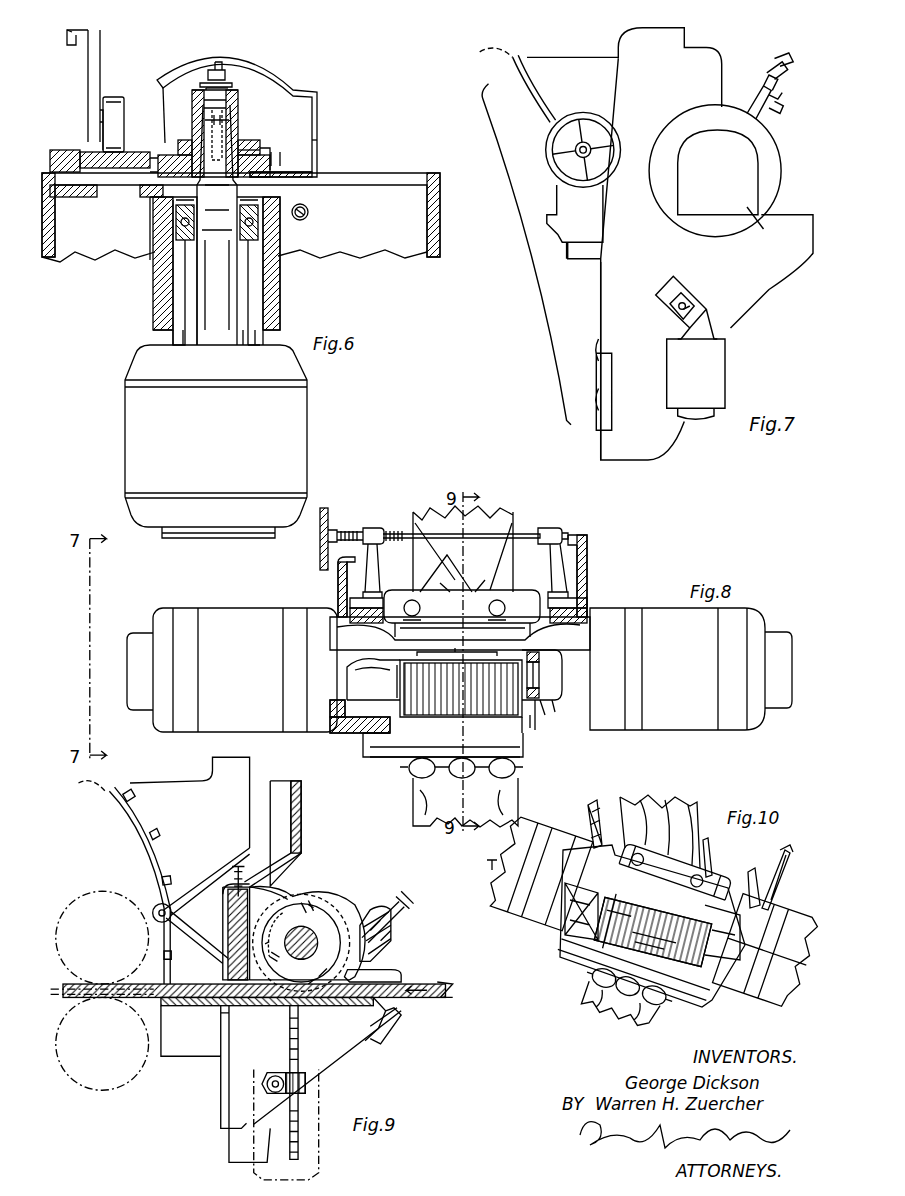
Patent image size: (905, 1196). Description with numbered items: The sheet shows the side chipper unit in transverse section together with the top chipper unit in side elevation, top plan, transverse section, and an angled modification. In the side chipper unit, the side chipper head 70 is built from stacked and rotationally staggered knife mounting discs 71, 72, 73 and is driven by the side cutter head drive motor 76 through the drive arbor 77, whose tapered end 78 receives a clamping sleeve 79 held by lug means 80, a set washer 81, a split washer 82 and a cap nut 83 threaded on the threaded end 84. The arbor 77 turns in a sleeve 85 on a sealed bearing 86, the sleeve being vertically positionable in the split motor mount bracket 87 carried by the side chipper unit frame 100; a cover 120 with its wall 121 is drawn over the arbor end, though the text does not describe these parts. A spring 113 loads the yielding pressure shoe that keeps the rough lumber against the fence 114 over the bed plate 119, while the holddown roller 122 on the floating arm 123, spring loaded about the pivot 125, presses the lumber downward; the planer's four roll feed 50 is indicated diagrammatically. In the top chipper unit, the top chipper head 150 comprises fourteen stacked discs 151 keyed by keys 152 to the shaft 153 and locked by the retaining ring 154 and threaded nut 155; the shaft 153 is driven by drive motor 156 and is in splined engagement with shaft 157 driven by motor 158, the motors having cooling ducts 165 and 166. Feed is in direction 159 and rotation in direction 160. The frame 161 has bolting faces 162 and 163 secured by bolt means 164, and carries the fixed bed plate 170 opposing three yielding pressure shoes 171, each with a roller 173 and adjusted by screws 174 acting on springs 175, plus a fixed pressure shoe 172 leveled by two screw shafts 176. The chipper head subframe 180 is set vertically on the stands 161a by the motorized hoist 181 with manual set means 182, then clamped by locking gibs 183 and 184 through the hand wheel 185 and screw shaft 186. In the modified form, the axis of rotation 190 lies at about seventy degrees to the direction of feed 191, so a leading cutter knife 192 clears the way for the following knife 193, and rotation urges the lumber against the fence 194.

In FIG. 9, the four roll feed 50 is at (70, 905).
In FIG. 6, the side chipper head 70 is at (288, 150).
In FIG. 6, the knife mounting disc 71 is at (258, 148).
In FIG. 6, the knife mounting disc 72 is at (272, 153).
In FIG. 6, the knife mounting disc 73 is at (283, 150).
In FIG. 6, the side cutter head drive motor 76 is at (228, 434).
In FIG. 6, the drive arbor 77 is at (217, 225).
In FIG. 6, the tapered end 78 is at (240, 115).
In FIG. 6, the clamping sleeve 79 is at (192, 99).
In FIG. 6, the lug means 80 is at (203, 88).
In FIG. 6, the set washer 81 is at (192, 90).
In FIG. 6, the split washer 82 is at (208, 75).
In FIG. 6, the cap nut 83 is at (228, 75).
In FIG. 6, the threaded end 84 is at (218, 62).
In FIG. 6, the sleeve 85 is at (280, 274).
In FIG. 6, the sealed bearing 86 is at (258, 220).
In FIG. 6, the split motor mount bracket 87 is at (153, 285).
In FIG. 6, the side chipper unit frame 100 is at (241, 226).
In FIG. 6, the spring 113 is at (304, 219).
In FIG. 6, the fence 114 is at (52, 152).
In FIG. 6, the bed plate 119 is at (70, 194).
In FIG. 6, the cap 120 is at (288, 83).
In FIG. 6, the cap wall 121 is at (317, 133).
In FIG. 6, the holddown roller 122 is at (103, 97).
In FIG. 6, the floating arm 123 is at (88, 70).
In FIG. 6, the pivot 125 is at (72, 38).
In FIG. 8, the top chipper head 150 is at (461, 676).
In FIG. 10, the top chipper head 150 is at (675, 847).
In FIG. 8, the stacked disc 151 is at (455, 717).
In FIG. 9, the stacked disc 151 is at (270, 910).
In FIG. 10, the stacked disc 151 is at (705, 925).
In FIG. 9, the key 152 is at (300, 922).
In FIG. 8, the shaft 153 is at (362, 733).
In FIG. 9, the shaft 153 is at (288, 907).
In FIG. 8, the retaining ring 154 is at (536, 726).
In FIG. 8, the threaded nut 155 is at (550, 697).
In FIG. 7, the drive motor 156 is at (750, 152).
In FIG. 8, the drive motor 156 is at (250, 696).
In FIG. 10, the drive motor 156 is at (530, 920).
In FIG. 8, the shaft 157 is at (558, 667).
In FIG. 8, the motor 158 is at (698, 714).
In FIG. 10, the motor 158 is at (780, 928).
In FIG. 8, the direction of feed 159 is at (448, 827).
In FIG. 9, the direction of feed 159 is at (393, 994).
In FIG. 10, the direction of feed 159 is at (612, 998).
In FIG. 8, the direction of rotation 160 is at (395, 678).
In FIG. 9, the direction of rotation 160 is at (300, 874).
In FIG. 10, the direction of rotation 160 is at (598, 900).
In FIG. 7, the frame 161 is at (650, 392).
In FIG. 8, the frame 161 is at (343, 600).
In FIG. 9, the frame 161 is at (335, 1052).
In FIG. 7, the stands 161a is at (609, 44).
In FIG. 7, the bolting face 162 is at (590, 361).
In FIG. 7, the bolting face 163 is at (532, 104).
In FIG. 9, the bolting face 163 is at (132, 824).
In FIG. 9, the bolt means 164 is at (150, 829).
In FIG. 7, the cooling duct 165 is at (738, 208).
In FIG. 8, the cooling duct 165 is at (136, 715).
In FIG. 8, the cooling duct 166 is at (781, 719).
In FIG. 9, the fixed bed plate 170 is at (245, 1000).
In FIG. 8, the yielding pressure shoe 171 is at (485, 763).
In FIG. 9, the yielding pressure shoe 171 is at (385, 962).
In FIG. 9, the fixed pressure shoe 172 is at (218, 967).
In FIG. 9, the roller 173 is at (340, 998).
In FIG. 8, the adjustment screw 174 is at (420, 779).
In FIG. 9, the adjustment screw 174 is at (398, 902).
In FIG. 9, the spring 175 is at (383, 937).
In FIG. 8, the screw shaft 176 is at (462, 596).
In FIG. 9, the screw shaft 176 is at (226, 862).
In FIG. 7, the chipper head subframe 180 is at (548, 58).
In FIG. 9, the chipper head subframe 180 is at (233, 852).
In FIG. 9, the motorized hoist 181 is at (305, 1149).
In FIG. 9, the manual set means 182 is at (258, 1067).
In FIG. 8, the locking gib 183 is at (375, 568).
In FIG. 7, the locking gib 184 is at (544, 152).
In FIG. 8, the locking gib 184 is at (565, 584).
In FIG. 8, the hand wheel 185 is at (330, 524).
In FIG. 9, the hand wheel 185 is at (200, 880).
In FIG. 8, the screw shaft 186 is at (408, 533).
In FIG. 10, the axis of rotation 190 is at (494, 875).
In FIG. 10, the direction of feed 191 is at (660, 1028).
In FIG. 10, the leading cutter knife 192 is at (615, 945).
In FIG. 10, the cutter knife 193 is at (645, 965).
In FIG. 10, the fence 194 is at (706, 860).